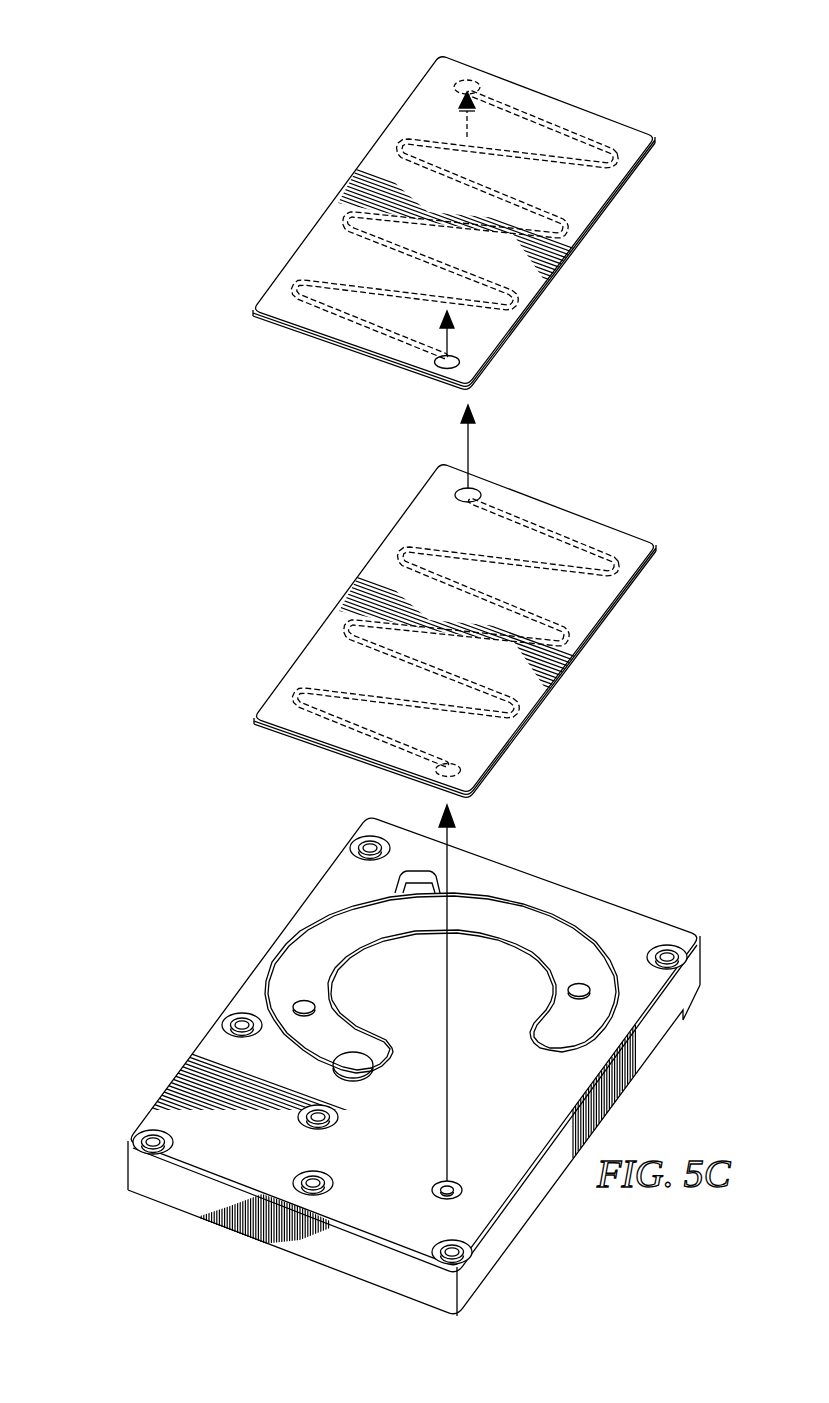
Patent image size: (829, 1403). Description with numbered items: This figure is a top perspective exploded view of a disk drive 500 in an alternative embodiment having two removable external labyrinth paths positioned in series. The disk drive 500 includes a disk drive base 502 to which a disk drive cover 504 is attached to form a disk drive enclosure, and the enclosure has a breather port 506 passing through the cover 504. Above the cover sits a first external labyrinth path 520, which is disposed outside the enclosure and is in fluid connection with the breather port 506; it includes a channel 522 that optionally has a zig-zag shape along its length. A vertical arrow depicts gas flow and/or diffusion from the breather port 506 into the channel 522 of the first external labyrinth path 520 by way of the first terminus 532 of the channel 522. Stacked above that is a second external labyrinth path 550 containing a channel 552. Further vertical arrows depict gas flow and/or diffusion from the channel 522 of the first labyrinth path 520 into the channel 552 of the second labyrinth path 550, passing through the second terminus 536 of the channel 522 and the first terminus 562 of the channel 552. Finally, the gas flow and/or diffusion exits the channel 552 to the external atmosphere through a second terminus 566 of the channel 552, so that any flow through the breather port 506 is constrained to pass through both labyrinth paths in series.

The disk drive 500 is at (280, 86).
The disk drive base 502 is at (420, 1091).
The disk drive cover 504 is at (650, 926).
The breather port 506 is at (433, 1187).
The external labyrinth path 520 is at (455, 601).
The channel 522 is at (474, 633).
The first terminus 532 is at (503, 772).
The second terminus 536 is at (500, 453).
The second external labyrinth path 550 is at (454, 204).
The channel 552 is at (590, 175).
The first terminus 562 is at (470, 80).
The second terminus 566 is at (460, 356).